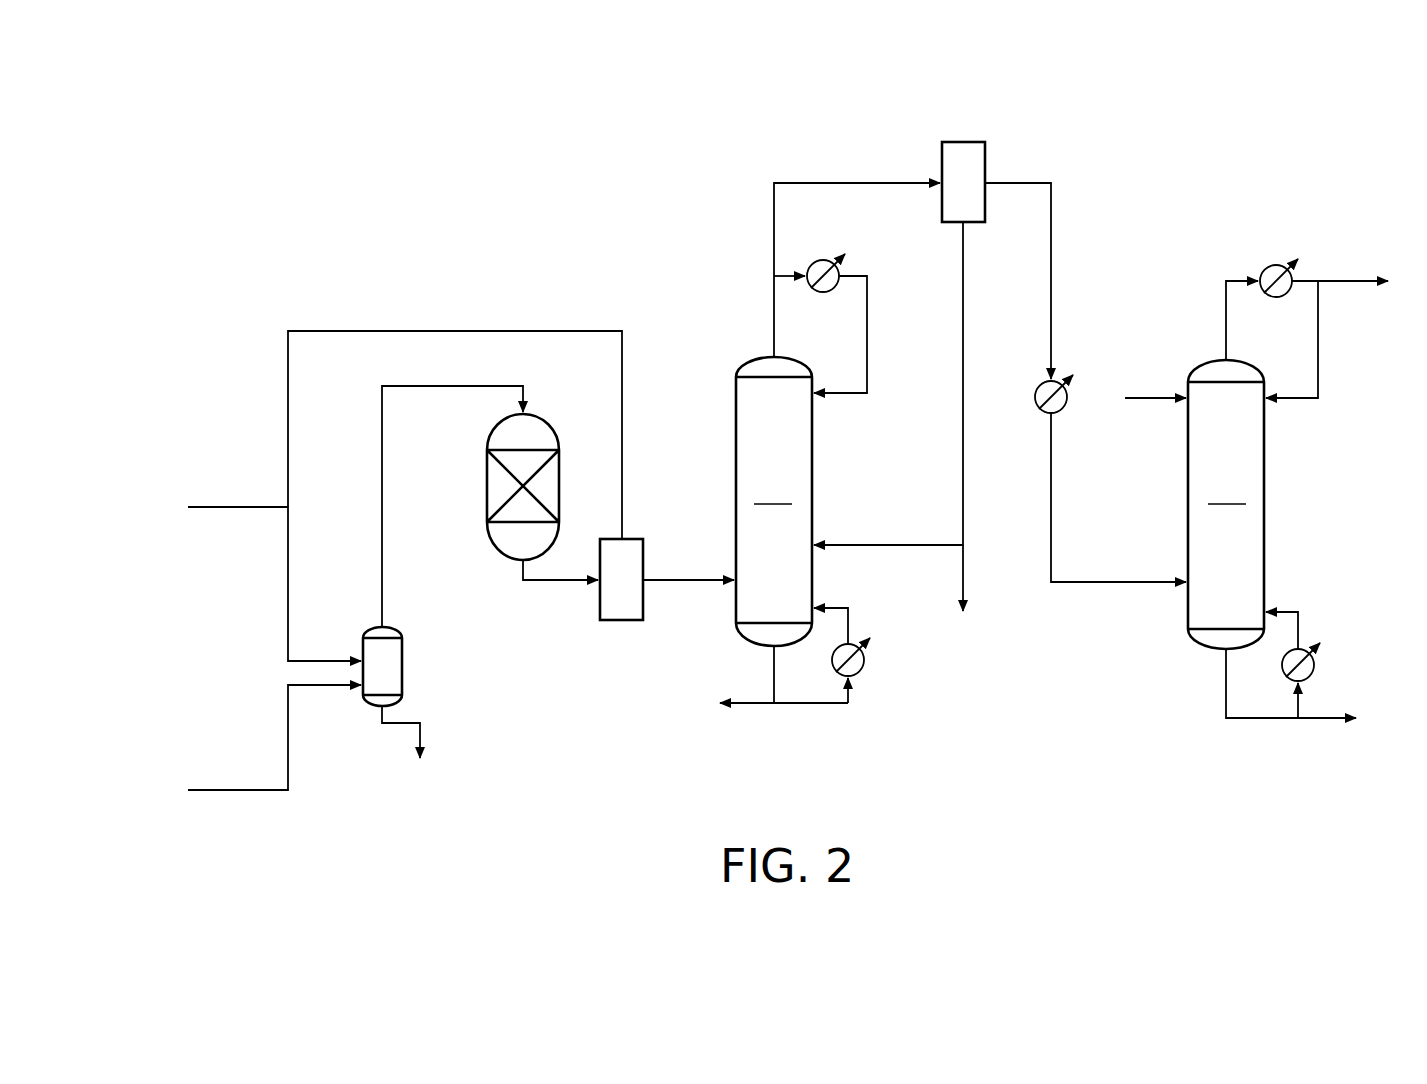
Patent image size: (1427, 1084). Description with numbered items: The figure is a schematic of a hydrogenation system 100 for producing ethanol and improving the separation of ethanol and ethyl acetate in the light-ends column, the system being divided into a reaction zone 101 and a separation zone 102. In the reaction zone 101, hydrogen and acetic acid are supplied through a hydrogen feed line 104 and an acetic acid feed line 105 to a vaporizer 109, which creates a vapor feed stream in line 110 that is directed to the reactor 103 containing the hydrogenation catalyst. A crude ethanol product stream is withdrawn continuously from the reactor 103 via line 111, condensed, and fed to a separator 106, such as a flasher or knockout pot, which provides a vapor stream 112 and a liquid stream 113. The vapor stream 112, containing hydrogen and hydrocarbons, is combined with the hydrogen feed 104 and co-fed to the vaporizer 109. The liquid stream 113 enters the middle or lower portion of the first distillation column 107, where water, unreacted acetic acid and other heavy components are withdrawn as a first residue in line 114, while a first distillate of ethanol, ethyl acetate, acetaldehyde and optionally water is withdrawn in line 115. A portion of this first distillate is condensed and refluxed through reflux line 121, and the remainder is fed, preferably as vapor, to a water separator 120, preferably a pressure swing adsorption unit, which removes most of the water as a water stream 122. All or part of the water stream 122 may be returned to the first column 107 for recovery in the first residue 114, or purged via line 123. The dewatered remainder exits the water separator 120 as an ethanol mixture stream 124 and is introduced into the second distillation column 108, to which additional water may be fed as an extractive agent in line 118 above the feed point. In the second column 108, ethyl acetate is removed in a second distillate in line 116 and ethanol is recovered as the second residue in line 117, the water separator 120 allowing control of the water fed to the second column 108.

The hydrogenation system 100 is at (443, 230).
The reaction zone 101 is at (477, 804).
The separation zone 102 is at (1105, 797).
The reactor 103 is at (538, 430).
The hydrogen feed line 104 is at (225, 507).
The acetic acid feed line 105 is at (228, 790).
The separator 106 is at (635, 555).
The first distillation column 107 is at (774, 501).
The second distillation column 108 is at (1226, 504).
The vaporizer 109 is at (370, 640).
The vapor feed stream line 110 is at (437, 386).
The crude ethanol product line 111 is at (551, 580).
The vapor stream 112 is at (522, 331).
The liquid stream 113 is at (681, 580).
The first residue line 114 is at (773, 703).
The first distillate line 115 is at (843, 183).
The second distillate line 116 is at (1226, 281).
The second residue line 117 is at (1226, 700).
The extractive agent line 118 is at (1145, 398).
The water separator 120 is at (978, 160).
The reflux line 121 is at (867, 345).
The water stream 122 is at (963, 410).
The purge line 123 is at (963, 572).
The ethanol mixture stream 124 is at (1051, 203).